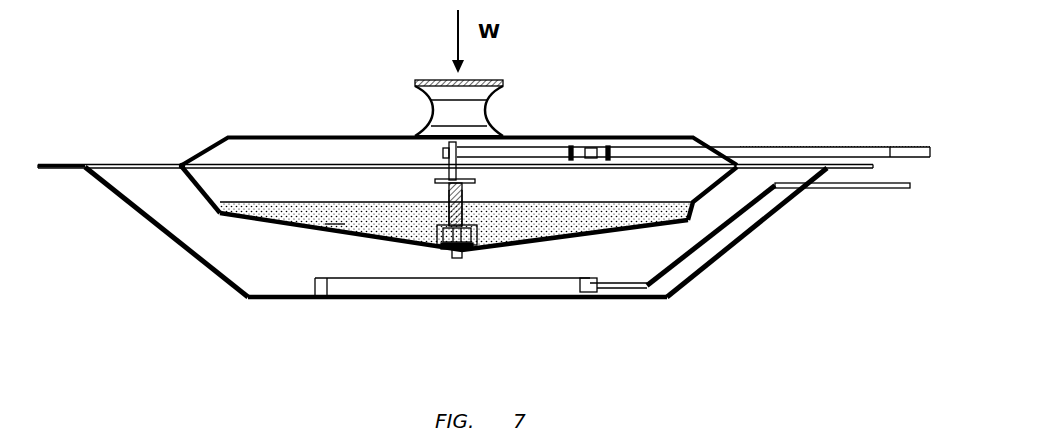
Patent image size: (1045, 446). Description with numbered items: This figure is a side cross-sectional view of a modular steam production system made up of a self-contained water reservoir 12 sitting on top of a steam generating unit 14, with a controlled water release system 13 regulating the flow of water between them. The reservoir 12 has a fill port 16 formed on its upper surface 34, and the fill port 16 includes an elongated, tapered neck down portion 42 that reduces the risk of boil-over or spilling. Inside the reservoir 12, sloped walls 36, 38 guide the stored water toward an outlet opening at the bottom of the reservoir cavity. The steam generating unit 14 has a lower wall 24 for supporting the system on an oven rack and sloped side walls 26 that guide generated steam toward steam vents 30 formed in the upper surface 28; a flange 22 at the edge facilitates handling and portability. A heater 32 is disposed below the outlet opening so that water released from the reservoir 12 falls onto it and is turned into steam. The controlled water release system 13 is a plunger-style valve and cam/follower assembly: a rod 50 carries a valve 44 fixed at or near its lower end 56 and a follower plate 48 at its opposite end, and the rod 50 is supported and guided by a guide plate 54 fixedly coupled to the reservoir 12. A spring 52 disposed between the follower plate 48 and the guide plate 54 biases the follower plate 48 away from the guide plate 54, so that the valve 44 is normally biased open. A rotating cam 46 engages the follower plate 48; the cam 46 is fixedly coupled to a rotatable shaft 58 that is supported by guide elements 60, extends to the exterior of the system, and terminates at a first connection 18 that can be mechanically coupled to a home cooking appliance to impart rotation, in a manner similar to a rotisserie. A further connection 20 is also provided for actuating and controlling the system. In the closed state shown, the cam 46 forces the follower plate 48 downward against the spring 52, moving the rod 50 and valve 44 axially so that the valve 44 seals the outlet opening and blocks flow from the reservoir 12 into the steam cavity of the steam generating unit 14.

The self-contained water reservoir 12 is at (350, 90).
The controlled water release system 13 is at (572, 206).
The steam generating unit 14 is at (350, 345).
The fill port 16 is at (431, 79).
The first connection 18 is at (915, 149).
The connection 20 is at (871, 190).
The flange 22 is at (60, 162).
The lower wall 24 is at (300, 301).
The side walls 26 is at (168, 248).
The upper surface 28 is at (178, 163).
The steam vents 30 is at (118, 162).
The heater 32 is at (455, 300).
The upper surface 34 is at (295, 136).
The sloped wall 36 is at (270, 232).
The sloped wall 38 is at (213, 195).
The neck down portion 42 is at (498, 112).
The valve 44 is at (482, 250).
The rotating cam 46 is at (443, 156).
The follower plate 48 is at (436, 181).
The rod 50 is at (479, 191).
The spring 52 is at (470, 213).
The guide plate 54 is at (437, 233).
The lower end 56 is at (450, 255).
The rotatable shaft 58 is at (673, 143).
The guide elements 60 is at (612, 145).